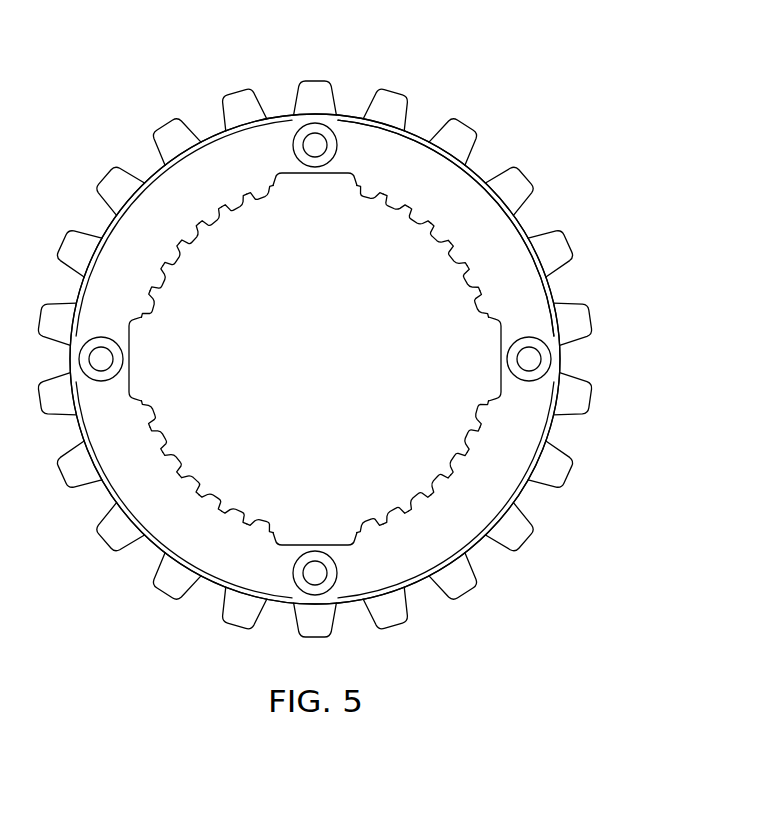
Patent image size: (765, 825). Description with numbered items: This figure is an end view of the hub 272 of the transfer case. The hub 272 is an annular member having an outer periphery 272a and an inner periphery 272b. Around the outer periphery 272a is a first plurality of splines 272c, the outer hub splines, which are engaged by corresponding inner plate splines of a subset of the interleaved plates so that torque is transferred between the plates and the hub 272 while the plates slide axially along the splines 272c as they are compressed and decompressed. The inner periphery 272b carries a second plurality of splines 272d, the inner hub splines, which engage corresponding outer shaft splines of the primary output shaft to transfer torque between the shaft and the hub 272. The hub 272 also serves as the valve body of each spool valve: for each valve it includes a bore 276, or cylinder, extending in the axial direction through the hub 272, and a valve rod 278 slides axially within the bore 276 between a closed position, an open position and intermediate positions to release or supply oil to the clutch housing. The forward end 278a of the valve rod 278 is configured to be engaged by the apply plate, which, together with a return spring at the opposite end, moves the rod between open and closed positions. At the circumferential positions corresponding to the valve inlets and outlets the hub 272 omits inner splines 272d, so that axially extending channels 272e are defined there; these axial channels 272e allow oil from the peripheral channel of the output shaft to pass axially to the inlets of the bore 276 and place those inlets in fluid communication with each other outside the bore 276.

The hub 272 is at (519, 41).
The outer periphery 272a is at (530, 490).
The inner periphery 272b is at (477, 537).
The first plurality of splines 272c is at (565, 468).
The second plurality of splines 272d is at (418, 500).
The axially extending channel 272e is at (337, 547).
The bore 276 is at (540, 327).
The valve rod 278 is at (388, 359).
The forward end 278a is at (615, 367).